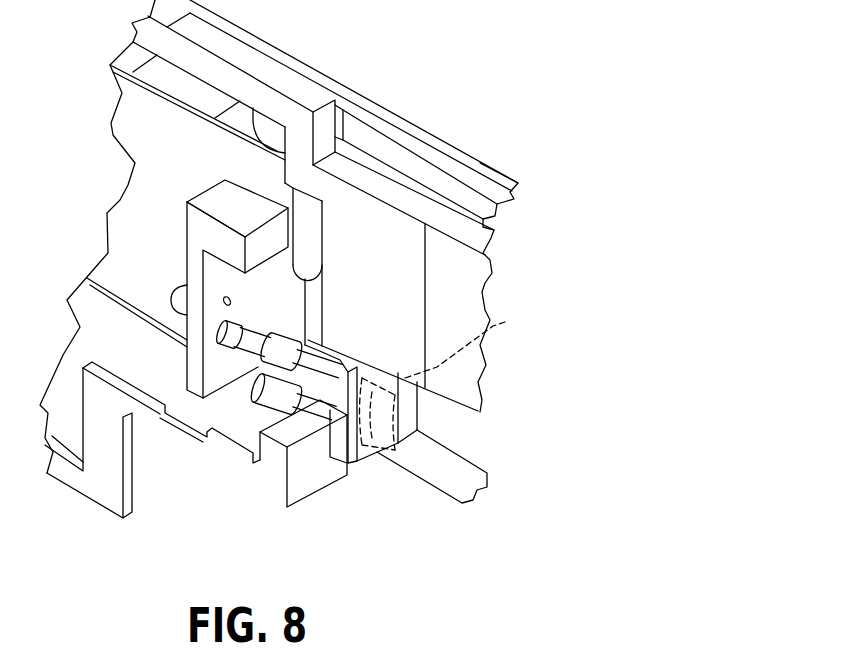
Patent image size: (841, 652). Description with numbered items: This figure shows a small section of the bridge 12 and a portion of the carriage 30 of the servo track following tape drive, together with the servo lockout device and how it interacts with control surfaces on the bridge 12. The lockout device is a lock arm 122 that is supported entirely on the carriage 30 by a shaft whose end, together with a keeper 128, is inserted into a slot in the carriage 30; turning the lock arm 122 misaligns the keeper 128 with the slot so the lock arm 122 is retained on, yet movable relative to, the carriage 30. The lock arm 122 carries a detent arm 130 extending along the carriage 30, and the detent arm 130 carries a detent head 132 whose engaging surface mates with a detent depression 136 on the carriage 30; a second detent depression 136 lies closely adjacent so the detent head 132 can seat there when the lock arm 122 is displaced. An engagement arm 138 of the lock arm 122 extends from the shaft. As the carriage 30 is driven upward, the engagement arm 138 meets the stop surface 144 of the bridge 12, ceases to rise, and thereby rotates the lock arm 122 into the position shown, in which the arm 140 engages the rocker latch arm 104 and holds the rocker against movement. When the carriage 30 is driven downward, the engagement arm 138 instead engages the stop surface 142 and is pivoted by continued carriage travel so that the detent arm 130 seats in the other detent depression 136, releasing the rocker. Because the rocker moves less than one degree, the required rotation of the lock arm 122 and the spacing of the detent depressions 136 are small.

The bridge 12 is at (465, 376).
The carriage 30 is at (203, 230).
The rocker latch arm 104 is at (476, 342).
The lock arm 122 is at (323, 358).
The keeper 128 is at (103, 300).
The detent arm 130 is at (252, 350).
The detent head 132 is at (226, 338).
The detent depression 136 is at (224, 303).
The engagement arm 138 is at (353, 463).
The arm 140 is at (417, 418).
The stop surface 142 is at (306, 404).
The stop surface 144 is at (315, 280).